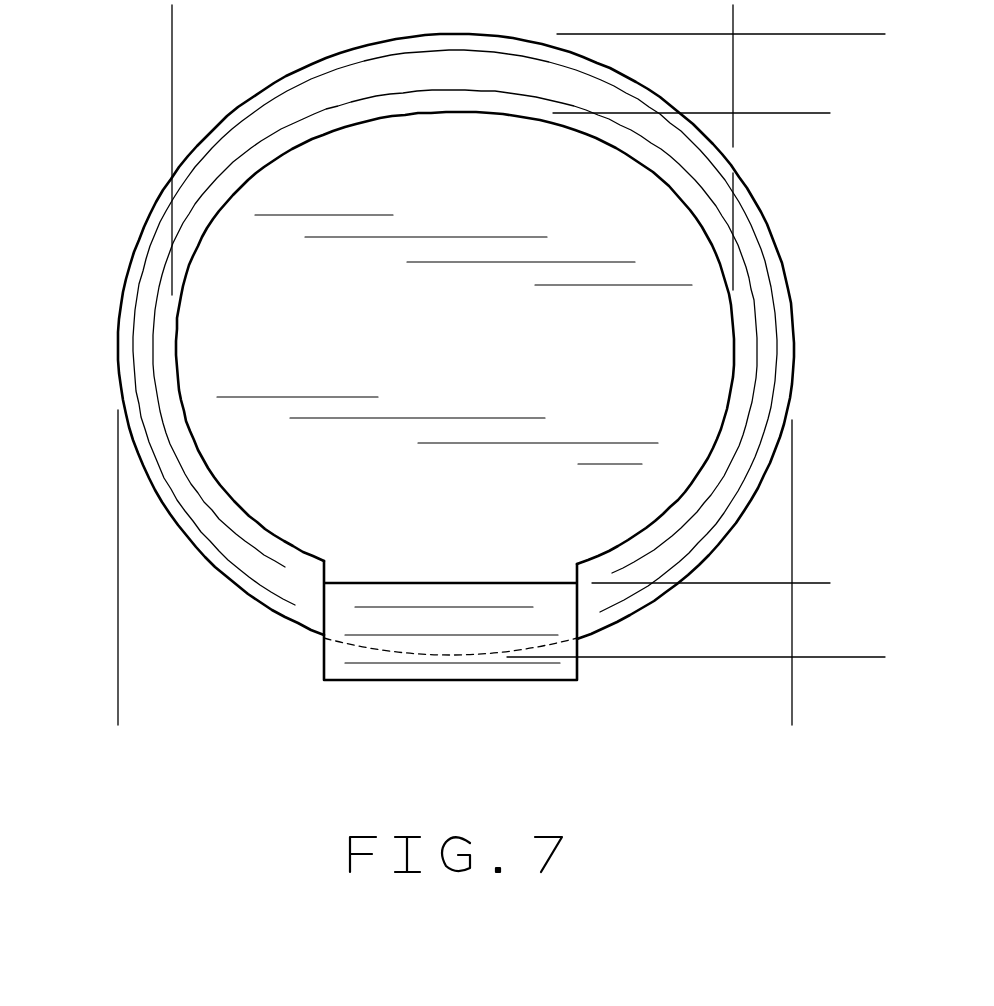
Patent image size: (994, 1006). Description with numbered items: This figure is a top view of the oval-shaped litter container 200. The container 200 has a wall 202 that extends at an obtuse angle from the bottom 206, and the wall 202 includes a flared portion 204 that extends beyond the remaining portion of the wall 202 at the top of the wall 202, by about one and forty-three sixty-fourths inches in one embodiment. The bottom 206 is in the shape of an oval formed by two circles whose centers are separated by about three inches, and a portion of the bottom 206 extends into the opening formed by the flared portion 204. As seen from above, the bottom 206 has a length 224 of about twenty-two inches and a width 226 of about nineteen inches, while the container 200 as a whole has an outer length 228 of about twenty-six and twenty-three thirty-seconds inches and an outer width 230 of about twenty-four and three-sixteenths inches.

The litter container 200 is at (150, 102).
The wall 202 is at (150, 297).
The flared portion 204 is at (380, 635).
The bottom 206 is at (225, 275).
The length 224 is at (172, 14).
The width 226 is at (822, 583).
The outer length 228 is at (118, 709).
The outer width 230 is at (875, 34).